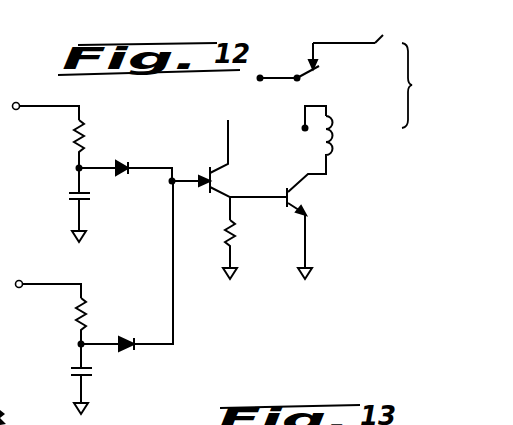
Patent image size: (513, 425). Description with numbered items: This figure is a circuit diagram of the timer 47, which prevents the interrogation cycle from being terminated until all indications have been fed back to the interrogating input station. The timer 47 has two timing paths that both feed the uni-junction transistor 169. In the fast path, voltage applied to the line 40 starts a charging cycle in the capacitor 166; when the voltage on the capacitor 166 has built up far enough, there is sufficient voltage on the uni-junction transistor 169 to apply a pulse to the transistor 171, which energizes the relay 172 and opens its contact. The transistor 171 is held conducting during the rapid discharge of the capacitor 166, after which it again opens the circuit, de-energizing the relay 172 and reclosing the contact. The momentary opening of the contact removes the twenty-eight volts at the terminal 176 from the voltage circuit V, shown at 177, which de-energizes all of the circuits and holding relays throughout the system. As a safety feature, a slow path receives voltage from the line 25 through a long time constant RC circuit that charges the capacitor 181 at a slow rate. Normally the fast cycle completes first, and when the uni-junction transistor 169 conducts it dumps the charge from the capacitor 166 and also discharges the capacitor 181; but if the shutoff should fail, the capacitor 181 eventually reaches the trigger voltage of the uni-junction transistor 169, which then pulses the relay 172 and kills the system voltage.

The line 25 is at (64, 104).
The capacitor 181 is at (71, 198).
The uni-junction transistor 169 is at (205, 178).
The line 40 is at (60, 282).
The capacitor 166 is at (94, 372).
The terminal 176 is at (262, 82).
The voltage circuit V 177 is at (393, 35).
The relay 172 is at (329, 128).
The transistor 171 is at (299, 201).
The timer 47 is at (342, 176).